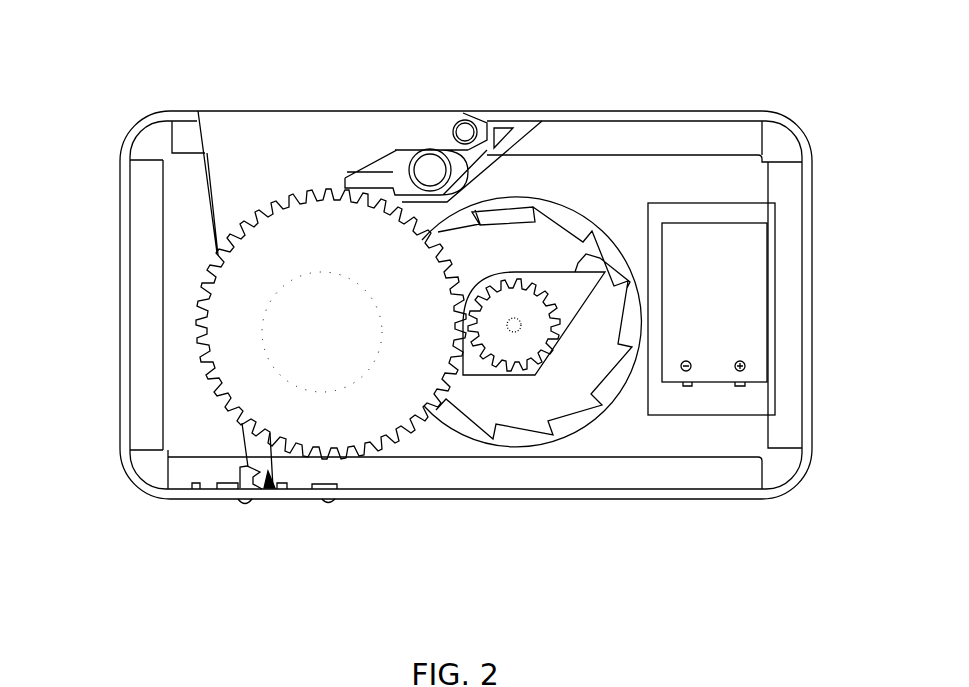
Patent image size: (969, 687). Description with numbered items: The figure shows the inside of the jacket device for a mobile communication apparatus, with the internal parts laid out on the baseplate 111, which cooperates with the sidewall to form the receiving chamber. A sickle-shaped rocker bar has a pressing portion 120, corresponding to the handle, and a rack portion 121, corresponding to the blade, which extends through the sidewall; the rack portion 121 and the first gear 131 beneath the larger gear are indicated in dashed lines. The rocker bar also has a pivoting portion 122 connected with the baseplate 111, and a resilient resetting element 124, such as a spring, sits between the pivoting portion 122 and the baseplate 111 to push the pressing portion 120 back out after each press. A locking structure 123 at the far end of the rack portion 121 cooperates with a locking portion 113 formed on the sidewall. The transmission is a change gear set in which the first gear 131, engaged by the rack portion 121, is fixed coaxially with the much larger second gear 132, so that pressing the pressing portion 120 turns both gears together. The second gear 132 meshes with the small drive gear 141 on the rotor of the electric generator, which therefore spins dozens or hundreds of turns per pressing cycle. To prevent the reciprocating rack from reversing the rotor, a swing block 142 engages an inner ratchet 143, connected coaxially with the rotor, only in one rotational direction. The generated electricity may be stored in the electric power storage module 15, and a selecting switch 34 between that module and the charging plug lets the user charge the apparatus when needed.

The pressing portion 120 is at (348, 109).
The rack portion 121 is at (232, 222).
The pivoting portion 122 is at (476, 122).
The resilient resetting element 124 is at (426, 152).
The baseplate 111 is at (180, 428).
The locking portion 113 is at (243, 460).
The locking structure 123 is at (268, 478).
The selecting switch 34 is at (327, 500).
The first gear 131 is at (362, 328).
The second gear 132 is at (432, 350).
The drive gear 141 is at (530, 340).
The swing block 142 is at (603, 275).
The inner ratchet 143 is at (620, 397).
The electric power storage module 15 is at (714, 299).